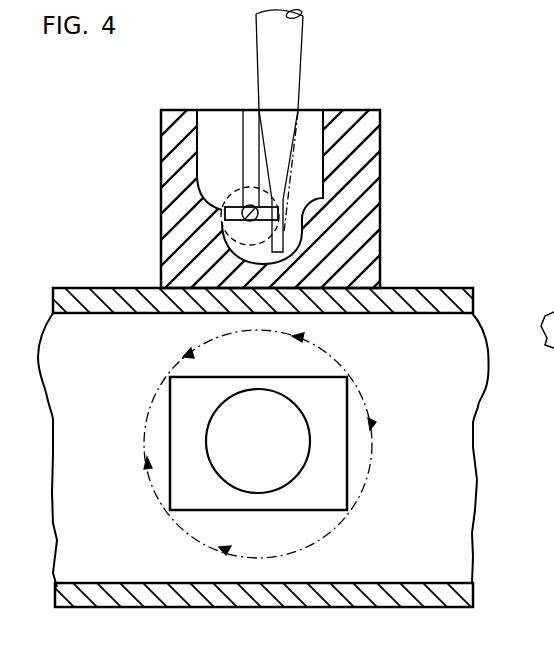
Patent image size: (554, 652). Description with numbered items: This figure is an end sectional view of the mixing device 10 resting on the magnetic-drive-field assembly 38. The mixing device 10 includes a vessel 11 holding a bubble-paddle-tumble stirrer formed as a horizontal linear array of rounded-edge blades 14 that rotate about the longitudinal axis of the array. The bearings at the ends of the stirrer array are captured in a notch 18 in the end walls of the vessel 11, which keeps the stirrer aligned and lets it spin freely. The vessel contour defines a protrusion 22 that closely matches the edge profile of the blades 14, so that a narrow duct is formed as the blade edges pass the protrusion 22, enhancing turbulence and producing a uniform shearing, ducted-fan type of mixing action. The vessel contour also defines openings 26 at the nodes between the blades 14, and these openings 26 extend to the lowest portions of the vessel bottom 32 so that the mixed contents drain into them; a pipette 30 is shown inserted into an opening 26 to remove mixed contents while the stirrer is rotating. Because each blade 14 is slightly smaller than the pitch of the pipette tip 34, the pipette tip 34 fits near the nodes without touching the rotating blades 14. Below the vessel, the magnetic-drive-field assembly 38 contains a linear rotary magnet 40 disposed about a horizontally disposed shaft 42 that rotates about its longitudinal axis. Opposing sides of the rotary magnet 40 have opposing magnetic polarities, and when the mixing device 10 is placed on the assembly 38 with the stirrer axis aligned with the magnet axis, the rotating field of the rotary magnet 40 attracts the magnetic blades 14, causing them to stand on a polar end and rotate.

The mixing device 10 is at (380, 110).
The vessel 11 is at (381, 172).
The rounded-edge blades 14 is at (229, 205).
The notch 18 is at (246, 118).
The protrusion 22 is at (223, 214).
The openings 26 is at (292, 248).
The pipette 30 is at (303, 45).
The vessel bottom 32 is at (223, 311).
The pipette tip 34 is at (287, 227).
The magnetic-drive-field assembly 38 is at (460, 515).
The linear rotary magnet 40 is at (348, 400).
The shaft 42 is at (278, 422).